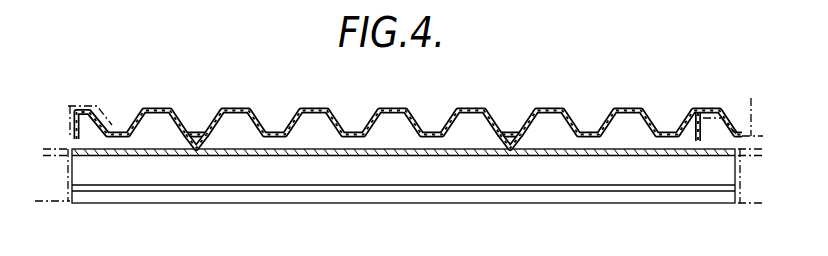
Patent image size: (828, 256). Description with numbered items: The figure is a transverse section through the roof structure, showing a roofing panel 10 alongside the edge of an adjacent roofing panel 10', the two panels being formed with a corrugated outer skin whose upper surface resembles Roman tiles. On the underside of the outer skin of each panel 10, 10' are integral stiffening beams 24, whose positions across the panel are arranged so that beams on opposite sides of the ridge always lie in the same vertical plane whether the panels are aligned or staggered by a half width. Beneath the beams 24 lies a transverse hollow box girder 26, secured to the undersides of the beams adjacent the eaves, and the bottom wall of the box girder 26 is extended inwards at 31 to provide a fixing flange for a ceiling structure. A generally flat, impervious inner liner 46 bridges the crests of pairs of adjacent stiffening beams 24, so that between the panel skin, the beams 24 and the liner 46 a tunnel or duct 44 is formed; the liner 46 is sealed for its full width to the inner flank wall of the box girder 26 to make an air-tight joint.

The roofing panel 10 is at (410, 103).
The adjacent roofing panel 10' is at (399, 134).
The stiffening beam 24 is at (203, 141).
The transverse hollow box girder 26 is at (344, 204).
The inward extension of bottom wall 31 is at (558, 188).
The tunnel or duct 44 is at (152, 123).
The inner liner 46 is at (348, 149).